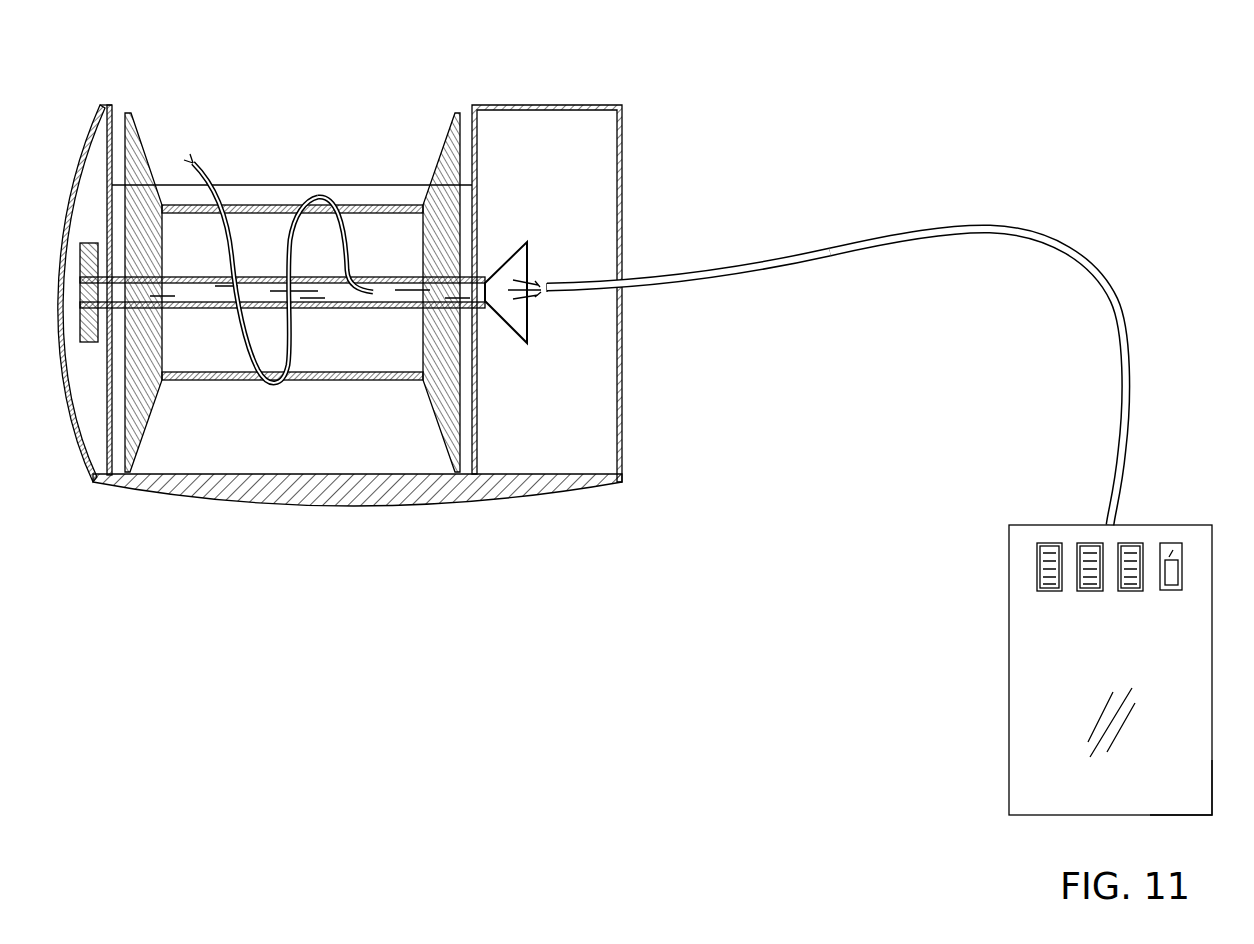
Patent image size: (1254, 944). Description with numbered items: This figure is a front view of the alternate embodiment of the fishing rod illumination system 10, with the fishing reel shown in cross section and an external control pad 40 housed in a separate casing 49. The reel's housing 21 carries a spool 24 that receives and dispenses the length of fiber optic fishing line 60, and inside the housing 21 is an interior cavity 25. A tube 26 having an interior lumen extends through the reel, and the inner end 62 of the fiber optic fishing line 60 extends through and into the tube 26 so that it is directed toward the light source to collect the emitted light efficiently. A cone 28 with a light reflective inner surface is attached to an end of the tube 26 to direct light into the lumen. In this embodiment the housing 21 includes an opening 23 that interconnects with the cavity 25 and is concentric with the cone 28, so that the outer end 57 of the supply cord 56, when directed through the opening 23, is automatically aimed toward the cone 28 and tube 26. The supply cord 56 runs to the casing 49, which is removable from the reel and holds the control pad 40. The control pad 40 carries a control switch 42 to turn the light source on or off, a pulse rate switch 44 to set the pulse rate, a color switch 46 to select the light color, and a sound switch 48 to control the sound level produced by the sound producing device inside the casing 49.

The fishing rod illumination system 10 is at (958, 142).
The housing 21 is at (370, 498).
The opening 23 is at (622, 300).
The spool 24 is at (137, 140).
The interior cavity 25 is at (578, 232).
The tube 26 is at (327, 307).
The cone 28 is at (515, 247).
The control pad 40 is at (1000, 708).
The control switch 42 is at (1036, 553).
The pulse rate switch 44 is at (1077, 553).
The color switch 46 is at (1141, 550).
The sound switch 48 is at (1181, 555).
The casing 49 is at (1157, 788).
The supply cord 56 is at (1078, 254).
The outer end 57 is at (548, 300).
The fiber optic fishing line 60 is at (195, 163).
The inner end 62 is at (375, 283).